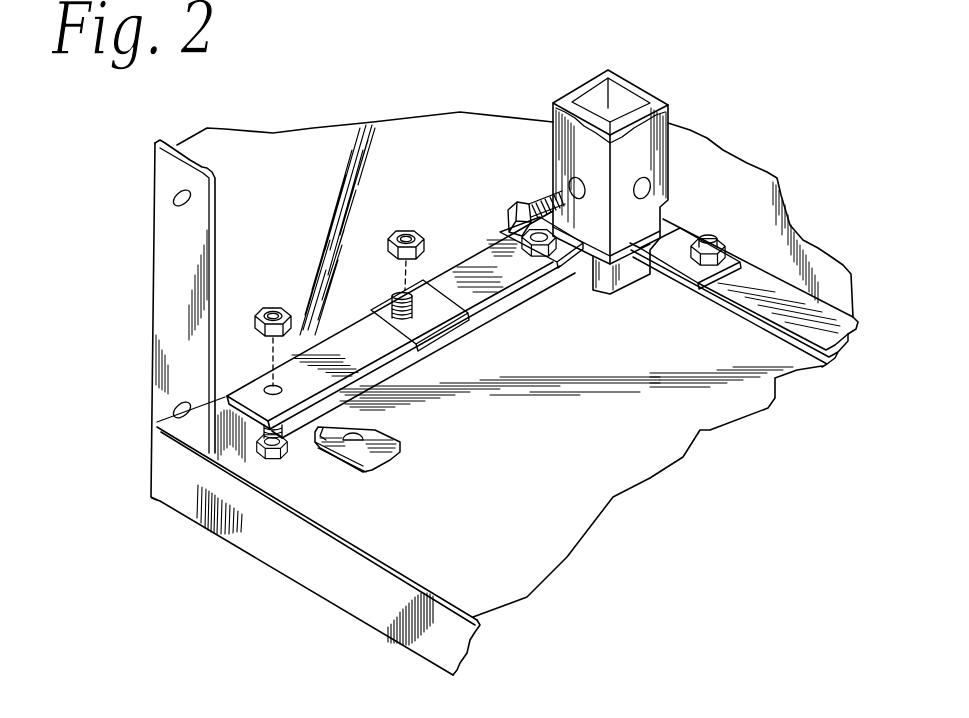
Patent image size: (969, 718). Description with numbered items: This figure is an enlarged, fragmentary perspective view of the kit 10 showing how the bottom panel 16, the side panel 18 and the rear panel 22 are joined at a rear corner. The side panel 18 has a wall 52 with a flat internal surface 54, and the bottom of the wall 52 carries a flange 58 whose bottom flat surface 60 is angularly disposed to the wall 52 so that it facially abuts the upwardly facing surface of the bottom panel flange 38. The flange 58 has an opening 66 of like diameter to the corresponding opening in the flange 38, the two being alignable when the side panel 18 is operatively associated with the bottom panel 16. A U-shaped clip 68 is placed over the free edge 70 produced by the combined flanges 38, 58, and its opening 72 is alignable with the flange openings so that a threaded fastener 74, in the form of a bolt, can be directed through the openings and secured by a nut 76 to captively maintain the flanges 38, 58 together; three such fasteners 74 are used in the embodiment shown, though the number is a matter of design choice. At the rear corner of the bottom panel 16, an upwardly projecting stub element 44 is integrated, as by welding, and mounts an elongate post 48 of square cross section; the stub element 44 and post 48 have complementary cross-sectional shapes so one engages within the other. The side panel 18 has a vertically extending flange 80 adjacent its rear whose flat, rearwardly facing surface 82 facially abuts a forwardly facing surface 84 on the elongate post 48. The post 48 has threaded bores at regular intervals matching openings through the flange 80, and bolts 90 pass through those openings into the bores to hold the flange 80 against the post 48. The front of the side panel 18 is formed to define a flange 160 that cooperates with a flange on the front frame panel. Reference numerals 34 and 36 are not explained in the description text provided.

The kit 10 is at (812, 103).
The bottom panel 16 is at (628, 453).
The side panel 18 is at (426, 148).
The rear panel 22 is at (757, 226).
The floor edge 34 is at (510, 583).
The channel member 36 is at (372, 562).
The bottom panel flange 38 is at (560, 267).
The stub element 44 is at (637, 280).
The elongate post 48 is at (660, 227).
The wall 52 is at (257, 153).
The internal surface 54 is at (308, 147).
The flange 58 is at (347, 338).
The bottom flat surface 60 is at (418, 325).
The opening 66 is at (293, 313).
The U-shaped clip 68 is at (430, 282).
The free edge 70 is at (556, 262).
The opening 72 is at (390, 352).
The threaded fastener 74 is at (440, 325).
The nut 76 is at (398, 230).
The vertically extending flange 80 is at (552, 123).
The rearwardly facing surface 82 is at (668, 123).
The forwardly facing surface 84 is at (613, 283).
The bolt 90 is at (523, 200).
The flange 160 is at (167, 228).